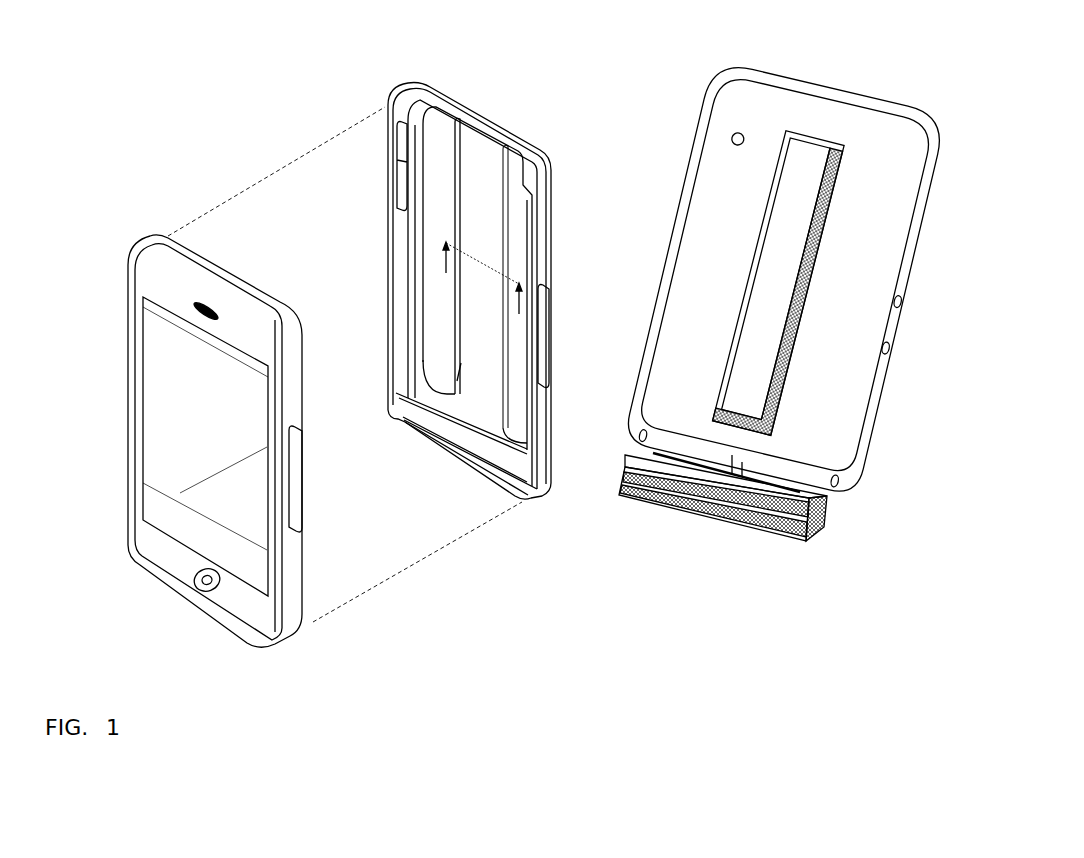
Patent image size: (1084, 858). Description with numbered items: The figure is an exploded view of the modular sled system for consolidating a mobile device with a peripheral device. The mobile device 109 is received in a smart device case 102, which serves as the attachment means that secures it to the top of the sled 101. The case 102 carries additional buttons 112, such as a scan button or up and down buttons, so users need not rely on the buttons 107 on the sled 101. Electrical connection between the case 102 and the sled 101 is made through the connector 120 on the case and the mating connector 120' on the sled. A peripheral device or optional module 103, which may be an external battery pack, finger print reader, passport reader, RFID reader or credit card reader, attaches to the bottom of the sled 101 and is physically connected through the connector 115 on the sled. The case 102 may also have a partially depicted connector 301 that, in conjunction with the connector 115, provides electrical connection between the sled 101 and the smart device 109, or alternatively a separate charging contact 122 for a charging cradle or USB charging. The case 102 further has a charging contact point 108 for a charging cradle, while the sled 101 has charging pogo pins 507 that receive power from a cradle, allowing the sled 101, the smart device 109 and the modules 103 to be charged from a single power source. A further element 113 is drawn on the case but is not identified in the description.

The modular sled 101 is at (779, 281).
The smart device case 102 is at (453, 254).
The peripheral device 103 is at (709, 530).
The buttons 107 is at (889, 349).
The charging contact point 108 is at (839, 488).
The mobile device 109 is at (128, 353).
The additional buttons 112 is at (543, 338).
The rib of case 113 is at (447, 315).
The physical connector 115 is at (710, 473).
The connector 120 is at (424, 294).
The connector 120' is at (742, 244).
The charging contact 122 is at (483, 466).
The connector 301 is at (741, 470).
The charging pogo pin 507 is at (733, 134).